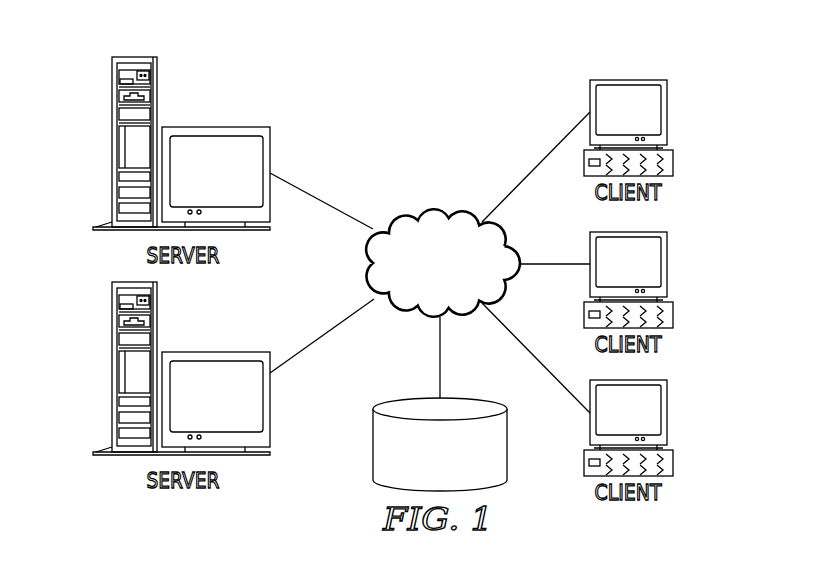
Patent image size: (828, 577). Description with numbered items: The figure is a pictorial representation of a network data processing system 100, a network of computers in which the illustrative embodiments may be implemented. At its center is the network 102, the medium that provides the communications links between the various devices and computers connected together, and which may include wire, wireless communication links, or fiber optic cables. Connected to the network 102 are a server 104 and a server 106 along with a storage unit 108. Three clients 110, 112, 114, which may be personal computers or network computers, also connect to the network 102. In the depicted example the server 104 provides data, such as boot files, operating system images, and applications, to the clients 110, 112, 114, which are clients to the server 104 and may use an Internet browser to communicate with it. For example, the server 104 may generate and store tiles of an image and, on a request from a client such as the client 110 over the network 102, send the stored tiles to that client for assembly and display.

The network data processing system 100 is at (496, 97).
The network 102 is at (410, 215).
The server 104 is at (113, 143).
The server 106 is at (113, 368).
The storage unit 108 is at (373, 452).
The client 110 is at (667, 113).
The client 112 is at (667, 264).
The client 114 is at (667, 413).